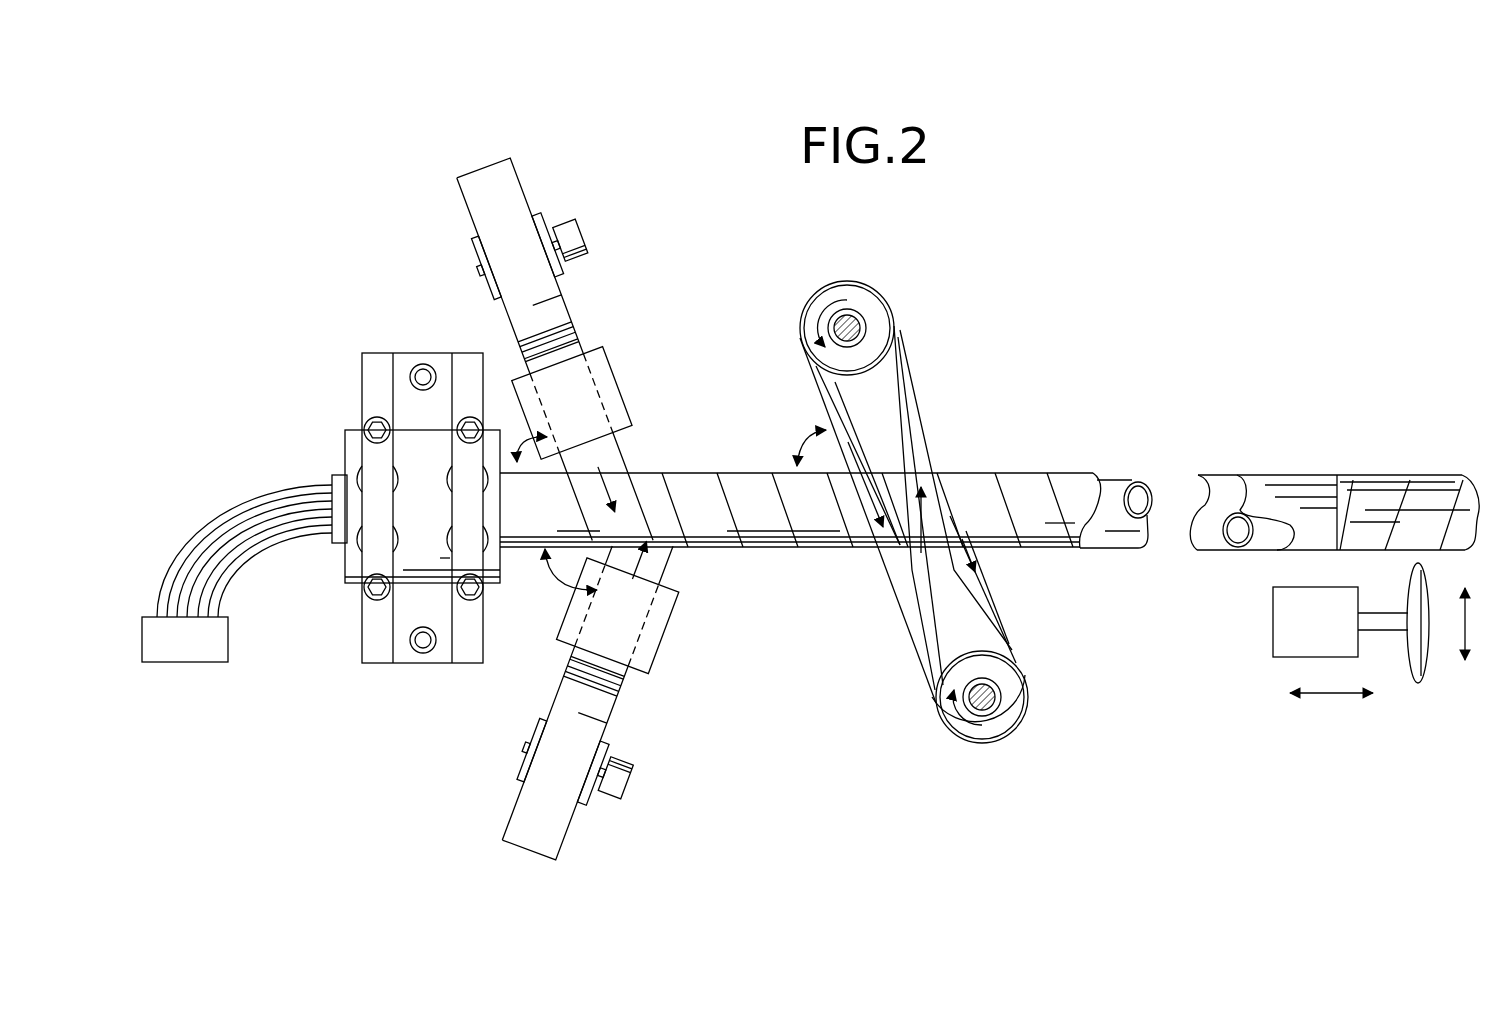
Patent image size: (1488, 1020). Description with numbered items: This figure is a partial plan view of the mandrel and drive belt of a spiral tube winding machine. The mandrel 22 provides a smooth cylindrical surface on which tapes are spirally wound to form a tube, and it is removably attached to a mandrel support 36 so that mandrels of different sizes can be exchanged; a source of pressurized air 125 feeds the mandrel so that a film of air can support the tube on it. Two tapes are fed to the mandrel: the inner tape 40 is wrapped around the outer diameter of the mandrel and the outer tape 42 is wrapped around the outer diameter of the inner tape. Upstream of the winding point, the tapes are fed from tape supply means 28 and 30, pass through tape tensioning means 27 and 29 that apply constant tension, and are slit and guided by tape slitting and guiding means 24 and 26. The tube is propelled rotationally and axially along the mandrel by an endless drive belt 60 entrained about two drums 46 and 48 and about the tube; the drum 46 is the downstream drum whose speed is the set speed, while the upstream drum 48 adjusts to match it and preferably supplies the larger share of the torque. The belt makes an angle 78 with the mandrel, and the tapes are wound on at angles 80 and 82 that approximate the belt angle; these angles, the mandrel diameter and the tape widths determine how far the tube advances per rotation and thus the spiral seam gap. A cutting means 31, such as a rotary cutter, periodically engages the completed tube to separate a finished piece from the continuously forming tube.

The mandrel 22 is at (507, 547).
The tape slitting and guiding means 24 is at (640, 652).
The tape slitting and guiding means 26 is at (605, 374).
The tape tensioning means 27 is at (625, 786).
The tape supply means 28 is at (553, 832).
The tape tensioning means 29 is at (568, 226).
The tape supply means 30 is at (563, 314).
The cutting means 31 is at (1424, 684).
The mandrel support 36 is at (360, 628).
The tape 40 is at (640, 578).
The tape 42 is at (632, 500).
The drum 46 is at (1011, 706).
The drum 48 is at (855, 295).
The endless drive belt 60 is at (917, 455).
The angle 78 is at (806, 442).
The angle 80 is at (562, 590).
The angle 82 is at (517, 460).
The source of pressurized air 125 is at (228, 625).